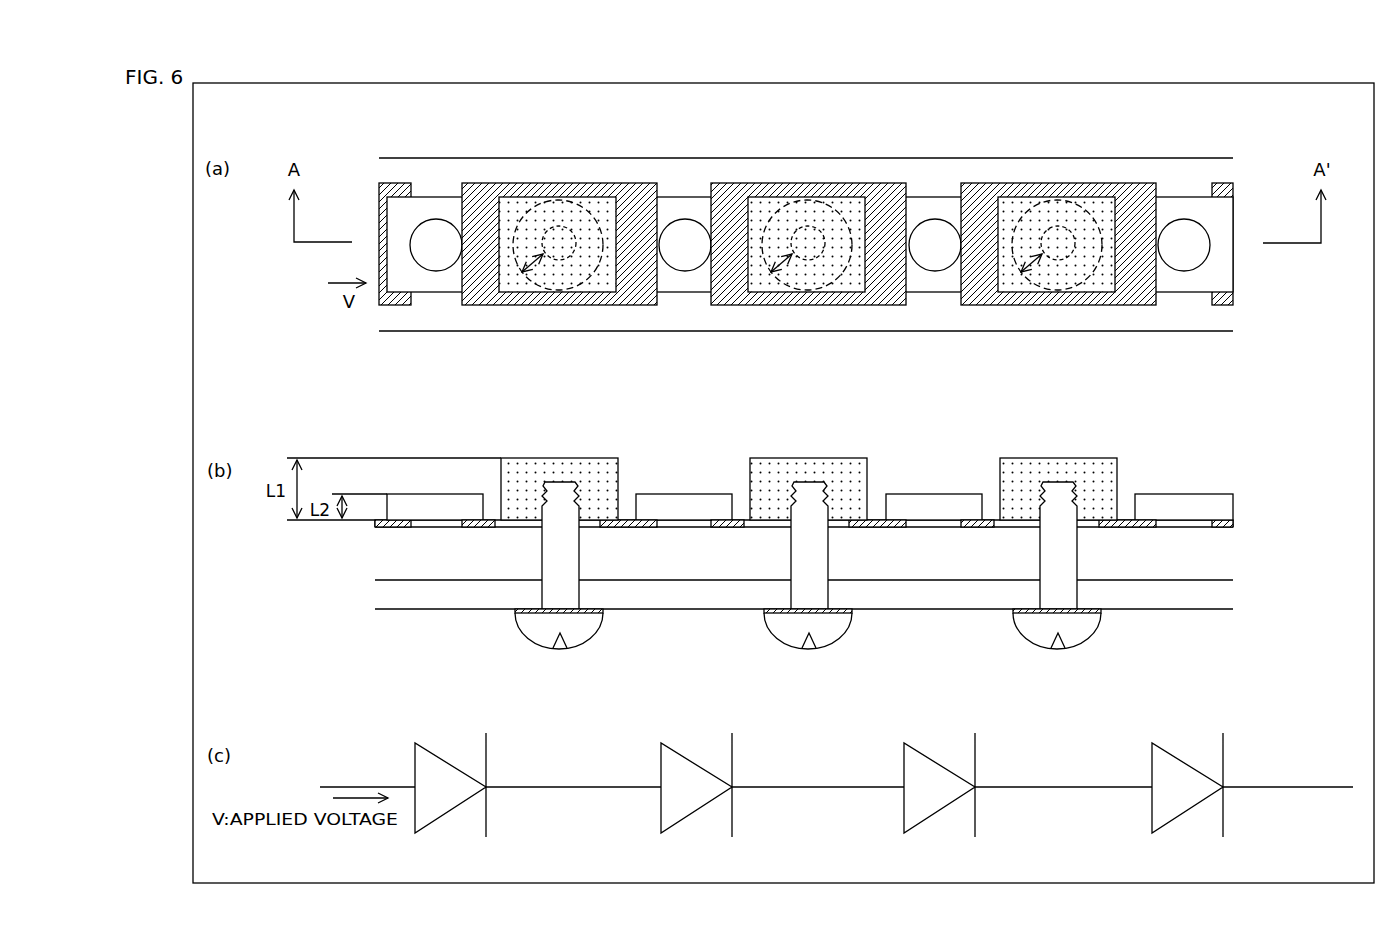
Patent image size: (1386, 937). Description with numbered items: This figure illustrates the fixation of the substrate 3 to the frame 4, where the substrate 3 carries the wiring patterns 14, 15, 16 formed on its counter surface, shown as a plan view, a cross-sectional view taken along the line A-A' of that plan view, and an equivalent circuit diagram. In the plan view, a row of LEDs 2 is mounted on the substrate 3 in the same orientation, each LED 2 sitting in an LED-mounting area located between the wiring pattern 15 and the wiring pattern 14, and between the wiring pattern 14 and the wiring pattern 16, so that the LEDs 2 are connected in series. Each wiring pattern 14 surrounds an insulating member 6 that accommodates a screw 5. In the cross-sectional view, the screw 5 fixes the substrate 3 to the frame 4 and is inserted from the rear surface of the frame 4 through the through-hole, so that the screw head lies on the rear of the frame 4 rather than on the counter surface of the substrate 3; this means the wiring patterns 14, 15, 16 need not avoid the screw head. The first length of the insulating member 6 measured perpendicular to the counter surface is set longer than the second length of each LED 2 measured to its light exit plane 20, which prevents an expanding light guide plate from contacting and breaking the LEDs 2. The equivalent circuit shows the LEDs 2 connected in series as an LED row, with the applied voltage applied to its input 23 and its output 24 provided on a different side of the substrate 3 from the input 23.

The LED 2 is at (437, 282).
The substrate 3 is at (382, 552).
The frame 4 is at (382, 598).
The screw 5 is at (567, 292).
The insulating member 6 is at (514, 282).
The wiring pattern 14 is at (569, 187).
The wiring pattern 15 is at (395, 190).
The wiring pattern 16 is at (1221, 190).
The light emitting module 20 is at (1218, 494).
The input 23 is at (356, 785).
The output 24 is at (1297, 786).